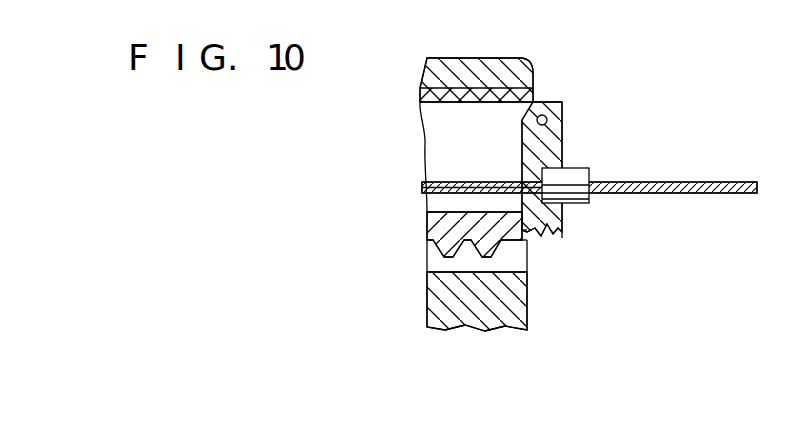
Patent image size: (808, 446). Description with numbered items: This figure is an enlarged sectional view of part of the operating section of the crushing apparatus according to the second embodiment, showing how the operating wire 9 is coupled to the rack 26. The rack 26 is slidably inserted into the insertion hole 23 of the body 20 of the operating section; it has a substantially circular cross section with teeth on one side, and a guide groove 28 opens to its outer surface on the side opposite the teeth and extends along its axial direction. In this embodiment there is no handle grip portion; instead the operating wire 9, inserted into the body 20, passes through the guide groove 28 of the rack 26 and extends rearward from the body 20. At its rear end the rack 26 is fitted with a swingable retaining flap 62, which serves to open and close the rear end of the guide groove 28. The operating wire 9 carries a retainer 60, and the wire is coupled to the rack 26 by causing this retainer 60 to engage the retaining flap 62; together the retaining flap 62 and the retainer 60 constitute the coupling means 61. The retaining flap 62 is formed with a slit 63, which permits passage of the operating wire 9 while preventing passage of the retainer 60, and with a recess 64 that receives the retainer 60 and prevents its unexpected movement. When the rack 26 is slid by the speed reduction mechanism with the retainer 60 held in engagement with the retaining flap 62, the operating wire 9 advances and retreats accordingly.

The operating wire 9 is at (702, 181).
The body 20 is at (465, 58).
The insertion hole 23 is at (445, 272).
The rack 26 is at (432, 230).
The guide groove 28 is at (428, 152).
The retainer 60 is at (589, 203).
The coupling means 61 is at (578, 153).
The retaining flap 62 is at (562, 113).
The slit 63 is at (557, 233).
The recess 64 is at (562, 152).